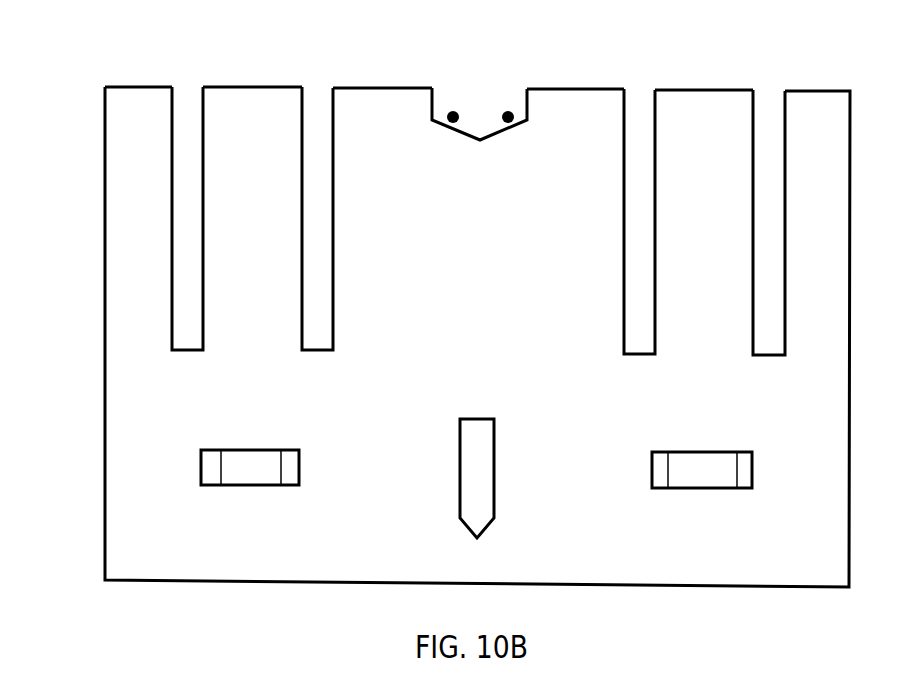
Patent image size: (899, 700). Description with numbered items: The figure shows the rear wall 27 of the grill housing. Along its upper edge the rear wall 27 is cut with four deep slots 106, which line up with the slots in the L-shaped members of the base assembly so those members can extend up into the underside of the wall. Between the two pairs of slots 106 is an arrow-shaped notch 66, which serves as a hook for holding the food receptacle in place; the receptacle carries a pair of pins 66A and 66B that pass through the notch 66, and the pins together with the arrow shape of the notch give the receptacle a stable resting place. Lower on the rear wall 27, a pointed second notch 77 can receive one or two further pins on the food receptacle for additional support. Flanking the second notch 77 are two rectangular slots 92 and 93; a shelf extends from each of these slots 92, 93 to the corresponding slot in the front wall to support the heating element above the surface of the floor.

The rear wall 27 is at (135, 415).
The slots in the rear wall 106 is at (318, 90).
The notch 66 is at (479, 104).
The pin 66A is at (451, 111).
The pin 66B is at (511, 110).
The second notch 77 is at (482, 482).
The slot 92 is at (253, 485).
The slot 93 is at (698, 488).